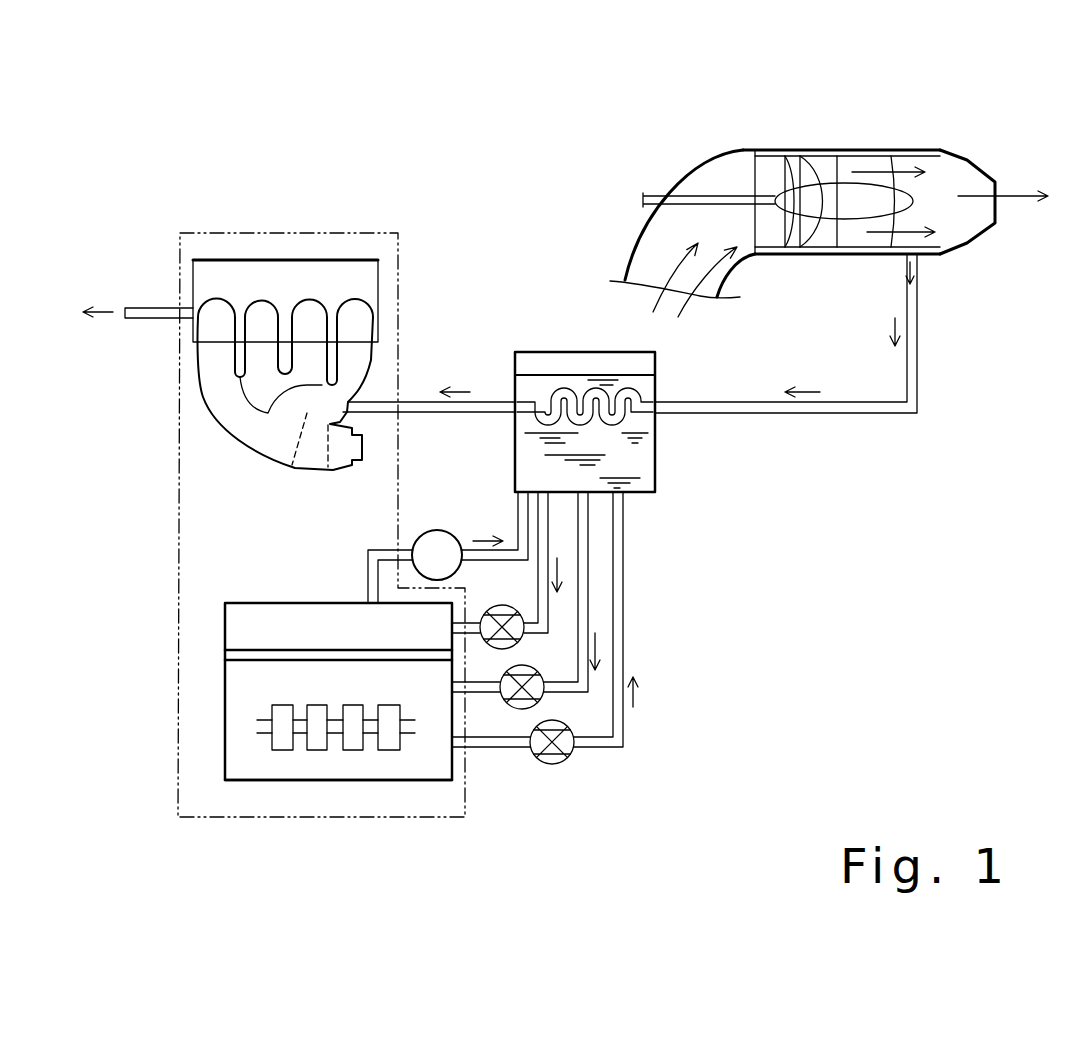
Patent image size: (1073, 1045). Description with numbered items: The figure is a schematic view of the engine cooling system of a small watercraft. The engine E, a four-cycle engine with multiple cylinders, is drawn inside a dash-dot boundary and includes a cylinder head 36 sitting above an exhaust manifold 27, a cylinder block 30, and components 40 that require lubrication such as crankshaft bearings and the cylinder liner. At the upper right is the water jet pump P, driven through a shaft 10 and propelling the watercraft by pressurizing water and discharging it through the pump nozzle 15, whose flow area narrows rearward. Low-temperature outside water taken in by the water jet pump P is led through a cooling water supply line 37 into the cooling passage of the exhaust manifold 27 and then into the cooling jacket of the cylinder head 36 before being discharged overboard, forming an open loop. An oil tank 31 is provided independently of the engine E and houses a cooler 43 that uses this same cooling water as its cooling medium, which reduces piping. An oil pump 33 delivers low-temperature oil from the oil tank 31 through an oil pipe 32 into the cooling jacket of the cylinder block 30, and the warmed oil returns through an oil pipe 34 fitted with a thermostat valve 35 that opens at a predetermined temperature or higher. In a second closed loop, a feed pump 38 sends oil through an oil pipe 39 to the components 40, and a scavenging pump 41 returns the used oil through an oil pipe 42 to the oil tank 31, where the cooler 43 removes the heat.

The shaft 10 is at (655, 193).
The water jet pump P is at (857, 150).
The pump nozzle 15 is at (977, 163).
The cooling water supply line 37 is at (852, 420).
The engine E is at (177, 553).
The cylinder head 36 is at (380, 297).
The exhaust manifold 27 is at (347, 367).
The oil tank 31 is at (655, 452).
The cooler 43 is at (555, 390).
The oil pipe 34 is at (517, 520).
The thermostat valve 35 is at (434, 530).
The oil pipe 32 is at (550, 527).
The oil pipe 39 is at (588, 572).
The oil pipe 42 is at (625, 723).
The oil pump 33 is at (523, 615).
The feed pump 38 is at (510, 709).
The scavenging pump 41 is at (555, 765).
The cylinder block 30 is at (271, 603).
The components 40 is at (406, 782).